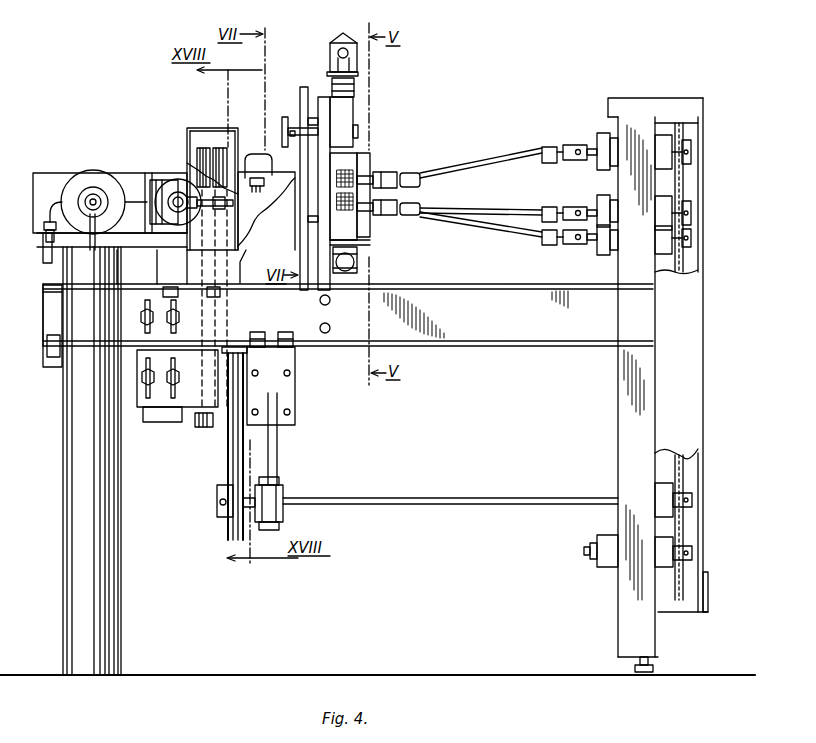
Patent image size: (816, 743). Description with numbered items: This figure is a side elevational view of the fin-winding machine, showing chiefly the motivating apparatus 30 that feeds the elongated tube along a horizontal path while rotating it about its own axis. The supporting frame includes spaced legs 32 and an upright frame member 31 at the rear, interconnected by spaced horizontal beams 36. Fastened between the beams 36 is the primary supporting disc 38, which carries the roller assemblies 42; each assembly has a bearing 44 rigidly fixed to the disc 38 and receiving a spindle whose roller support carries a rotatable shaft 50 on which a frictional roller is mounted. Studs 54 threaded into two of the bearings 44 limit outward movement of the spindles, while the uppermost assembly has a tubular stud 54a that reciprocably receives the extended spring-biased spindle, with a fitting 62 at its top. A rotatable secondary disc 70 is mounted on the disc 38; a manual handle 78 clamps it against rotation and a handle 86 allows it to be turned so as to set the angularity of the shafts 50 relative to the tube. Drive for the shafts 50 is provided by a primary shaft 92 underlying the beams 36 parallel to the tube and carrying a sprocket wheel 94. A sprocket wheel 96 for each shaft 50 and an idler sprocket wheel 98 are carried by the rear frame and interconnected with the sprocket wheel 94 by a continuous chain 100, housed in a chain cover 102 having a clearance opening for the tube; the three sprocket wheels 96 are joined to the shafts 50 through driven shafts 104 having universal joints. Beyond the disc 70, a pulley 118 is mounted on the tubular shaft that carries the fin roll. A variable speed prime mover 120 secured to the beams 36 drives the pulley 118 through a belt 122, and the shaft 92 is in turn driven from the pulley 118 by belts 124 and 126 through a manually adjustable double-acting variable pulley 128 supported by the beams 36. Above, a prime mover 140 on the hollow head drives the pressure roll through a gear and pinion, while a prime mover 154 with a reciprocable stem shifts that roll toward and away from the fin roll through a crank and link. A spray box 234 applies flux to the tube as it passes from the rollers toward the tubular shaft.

The motivating apparatus 30 is at (375, 80).
The column 31 is at (627, 422).
The legs 32 is at (76, 553).
The horizontal beams 36 is at (457, 342).
The primary supporting disc 38 is at (322, 97).
The roller assemblies 42 is at (362, 248).
The bearing 44 is at (346, 127).
The rotatable shaft 50 is at (388, 179).
The studs 54 is at (358, 261).
The tubular stud 54a is at (356, 86).
The eye bolt 62 is at (345, 35).
The secondary disc 70 is at (303, 217).
The manual handle 78 is at (282, 117).
The handle 86 is at (302, 90).
The primary shaft 92 is at (448, 502).
The sprocket wheel 94 is at (693, 505).
The sprocket wheel 96 is at (692, 162).
The idler sprocket wheel 98 is at (693, 560).
The continuous chain 100 is at (685, 527).
The chain cover 102 is at (693, 408).
The driven shafts 104 is at (497, 167).
The pulley 118 is at (212, 147).
The variable speed prime mover 120 is at (171, 398).
The belt 122 is at (200, 147).
The belt 124 is at (222, 147).
The belt 126 is at (233, 447).
The double-acting variable pulley 128 is at (206, 426).
The prime mover 140 is at (80, 180).
The prime mover 154 is at (170, 180).
The spray box 234 is at (244, 257).